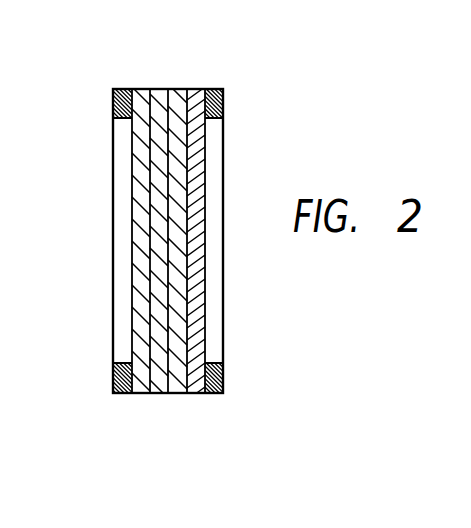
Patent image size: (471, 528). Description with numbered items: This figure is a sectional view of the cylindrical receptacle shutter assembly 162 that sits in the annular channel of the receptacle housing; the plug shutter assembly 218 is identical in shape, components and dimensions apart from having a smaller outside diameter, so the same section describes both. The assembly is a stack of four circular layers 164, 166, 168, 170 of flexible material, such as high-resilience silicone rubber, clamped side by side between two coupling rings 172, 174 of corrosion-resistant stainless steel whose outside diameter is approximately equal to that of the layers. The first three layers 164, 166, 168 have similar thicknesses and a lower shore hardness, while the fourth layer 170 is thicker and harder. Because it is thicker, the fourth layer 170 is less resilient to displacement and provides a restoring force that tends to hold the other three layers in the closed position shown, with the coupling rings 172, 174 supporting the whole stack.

The receptacle shutter assembly 162 is at (257, 83).
The plug shutter assembly 218 is at (171, 286).
The first circular layer 164 is at (138, 393).
The second circular layer 166 is at (158, 393).
The third circular layer 168 is at (177, 393).
The fourth circular layer 170 is at (193, 393).
The coupling ring 172 is at (113, 378).
The coupling ring 174 is at (223, 377).